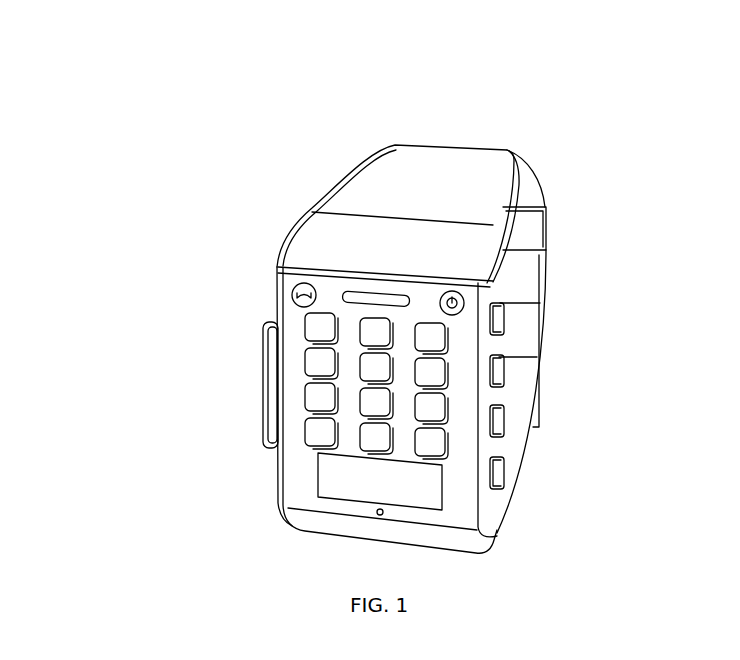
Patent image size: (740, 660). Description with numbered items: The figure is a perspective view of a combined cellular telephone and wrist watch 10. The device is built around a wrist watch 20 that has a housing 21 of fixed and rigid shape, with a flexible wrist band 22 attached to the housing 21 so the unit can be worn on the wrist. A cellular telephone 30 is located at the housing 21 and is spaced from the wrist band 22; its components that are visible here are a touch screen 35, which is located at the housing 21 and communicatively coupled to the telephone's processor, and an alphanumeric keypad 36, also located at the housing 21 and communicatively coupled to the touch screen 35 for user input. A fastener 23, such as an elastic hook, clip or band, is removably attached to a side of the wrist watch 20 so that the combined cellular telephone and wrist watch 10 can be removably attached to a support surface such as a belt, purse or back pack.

The combined cellular telephone and wrist watch 10 is at (265, 146).
The wrist watch 20 is at (538, 185).
The housing 21 is at (280, 247).
The flexible wrist band 22 is at (402, 160).
The fastener 23 is at (270, 397).
The cellular telephone 30 is at (163, 322).
The touch screen 35 is at (332, 480).
The alphanumeric keypad 36 is at (462, 417).